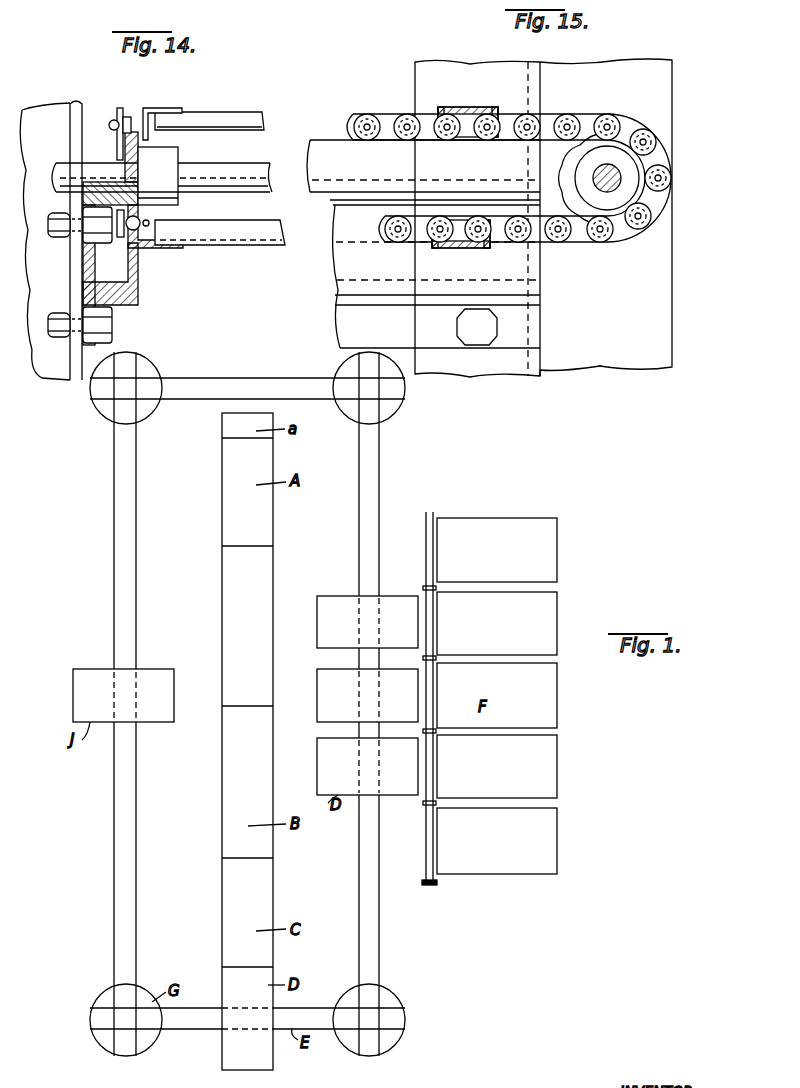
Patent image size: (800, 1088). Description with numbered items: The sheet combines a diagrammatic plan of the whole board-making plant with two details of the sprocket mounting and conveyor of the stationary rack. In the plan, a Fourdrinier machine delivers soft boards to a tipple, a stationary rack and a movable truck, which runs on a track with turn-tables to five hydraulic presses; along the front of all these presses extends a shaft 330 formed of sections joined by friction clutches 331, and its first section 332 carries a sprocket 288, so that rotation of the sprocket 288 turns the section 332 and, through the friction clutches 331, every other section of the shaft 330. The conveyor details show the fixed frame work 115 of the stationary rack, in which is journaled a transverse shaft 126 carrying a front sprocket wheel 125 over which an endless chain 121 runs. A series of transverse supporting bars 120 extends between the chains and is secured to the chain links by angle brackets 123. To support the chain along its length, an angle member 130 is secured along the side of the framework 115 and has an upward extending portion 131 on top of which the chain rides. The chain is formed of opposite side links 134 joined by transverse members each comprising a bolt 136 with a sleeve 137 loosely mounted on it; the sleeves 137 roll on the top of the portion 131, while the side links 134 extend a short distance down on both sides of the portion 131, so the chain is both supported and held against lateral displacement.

In FIG. 14, the fixed frame work 115 is at (73, 360).
In FIG. 15, the fixed frame work 115 is at (648, 292).
In FIG. 14, the transverse supporting bar 120 is at (214, 118).
In FIG. 15, the transverse supporting bar 120 is at (470, 107).
In FIG. 15, the endless chain 121 is at (560, 244).
In FIG. 14, the angle bracket 123 is at (158, 110).
In FIG. 15, the angle bracket 123 is at (486, 107).
In FIG. 15, the front sprocket wheel 125 is at (650, 160).
In FIG. 15, the transverse shaft 126 is at (612, 184).
In FIG. 14, the angle member 130 is at (110, 163).
In FIG. 15, the angle member 130 is at (310, 150).
In FIG. 14, the upward extending portion 131 is at (146, 163).
In FIG. 15, the upward extending portion 131 is at (353, 133).
In FIG. 14, the side link 134 is at (127, 97).
In FIG. 14, the bolt 136 is at (110, 126).
In FIG. 14, the sleeve 137 is at (131, 118).
In FIG. 1, the sprocket 288 is at (424, 884).
In FIG. 1, the shaft 330 is at (424, 658).
In FIG. 1, the friction clutch 331 is at (424, 588).
In FIG. 1, the first section 332 is at (425, 845).